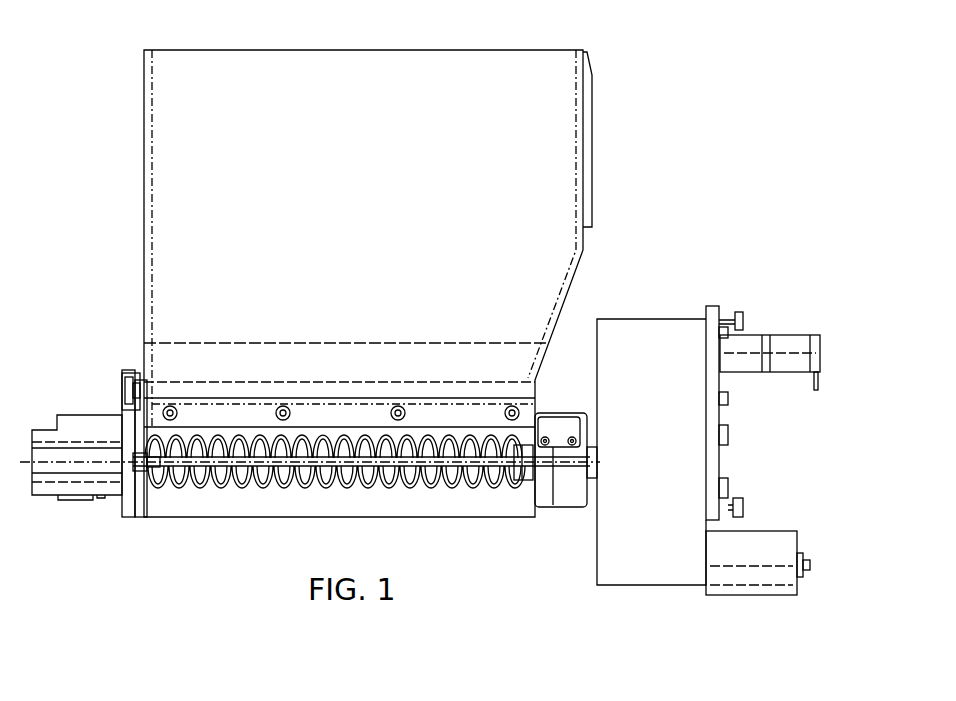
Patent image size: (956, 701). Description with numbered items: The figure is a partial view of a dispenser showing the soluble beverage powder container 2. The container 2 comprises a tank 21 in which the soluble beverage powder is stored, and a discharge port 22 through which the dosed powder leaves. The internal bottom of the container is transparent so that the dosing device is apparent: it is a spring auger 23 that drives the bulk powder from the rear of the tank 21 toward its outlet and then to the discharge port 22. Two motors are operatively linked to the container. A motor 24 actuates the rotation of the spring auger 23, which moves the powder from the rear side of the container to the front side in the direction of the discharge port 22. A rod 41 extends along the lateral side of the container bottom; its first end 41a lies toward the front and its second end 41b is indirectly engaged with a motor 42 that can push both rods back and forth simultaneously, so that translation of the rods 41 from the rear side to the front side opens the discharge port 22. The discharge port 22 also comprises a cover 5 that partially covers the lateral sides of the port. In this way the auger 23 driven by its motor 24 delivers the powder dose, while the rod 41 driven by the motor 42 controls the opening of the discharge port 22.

The soluble beverage powder container 2 is at (622, 98).
The tank 21 is at (560, 178).
The discharge port 22 is at (139, 370).
The spring auger 23 is at (274, 488).
The motor 24 is at (800, 545).
The cover 5 is at (55, 465).
The rod 41 is at (343, 463).
The screw shaft left end 41a is at (152, 483).
The second end of the rod 41b is at (560, 462).
The motor 42 is at (822, 355).